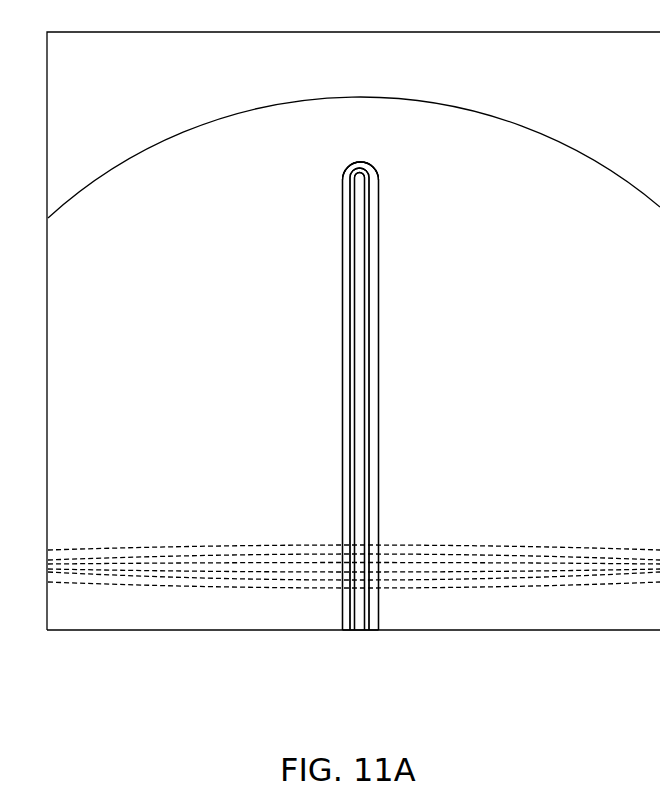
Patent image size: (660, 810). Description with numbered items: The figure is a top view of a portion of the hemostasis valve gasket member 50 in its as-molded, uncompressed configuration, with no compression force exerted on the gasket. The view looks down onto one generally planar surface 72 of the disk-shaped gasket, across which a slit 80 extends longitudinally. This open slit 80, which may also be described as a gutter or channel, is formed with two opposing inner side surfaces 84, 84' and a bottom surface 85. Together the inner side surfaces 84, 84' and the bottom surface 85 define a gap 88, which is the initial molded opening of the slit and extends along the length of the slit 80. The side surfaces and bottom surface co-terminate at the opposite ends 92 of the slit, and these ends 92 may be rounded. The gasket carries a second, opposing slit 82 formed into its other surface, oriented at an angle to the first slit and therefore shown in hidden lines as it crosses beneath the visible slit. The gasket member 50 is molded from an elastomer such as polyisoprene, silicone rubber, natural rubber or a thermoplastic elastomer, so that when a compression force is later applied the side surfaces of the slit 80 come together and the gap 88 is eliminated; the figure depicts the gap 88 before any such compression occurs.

The hemostasis valve gasket member 50 is at (578, 128).
The surface 72 is at (131, 176).
The slit 80 is at (341, 203).
The slit 82 is at (565, 586).
The inner side surface 84 is at (402, 396).
The inner side surface 84' is at (315, 399).
The bottom surface 85 is at (358, 410).
The gap 88 is at (360, 635).
The end 92 is at (360, 161).